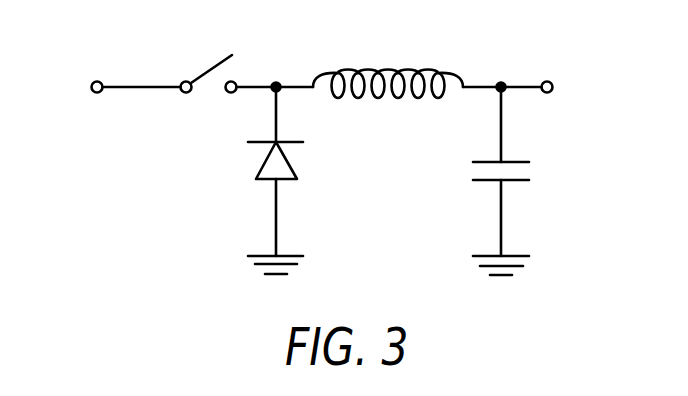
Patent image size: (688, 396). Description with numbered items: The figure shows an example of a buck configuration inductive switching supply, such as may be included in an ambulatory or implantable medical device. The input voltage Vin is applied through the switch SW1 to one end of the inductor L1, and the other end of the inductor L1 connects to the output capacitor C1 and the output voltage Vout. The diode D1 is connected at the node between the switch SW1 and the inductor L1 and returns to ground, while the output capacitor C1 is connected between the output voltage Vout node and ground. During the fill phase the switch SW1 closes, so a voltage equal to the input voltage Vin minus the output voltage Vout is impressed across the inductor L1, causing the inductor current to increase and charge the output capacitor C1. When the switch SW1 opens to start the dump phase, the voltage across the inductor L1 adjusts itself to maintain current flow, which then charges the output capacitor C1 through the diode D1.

The switch SW1 is at (211, 48).
The inductor L1 is at (388, 61).
The diode D1 is at (295, 180).
The output capacitor C1 is at (520, 181).
The input voltage Vin is at (70, 77).
The output voltage Vout is at (578, 80).